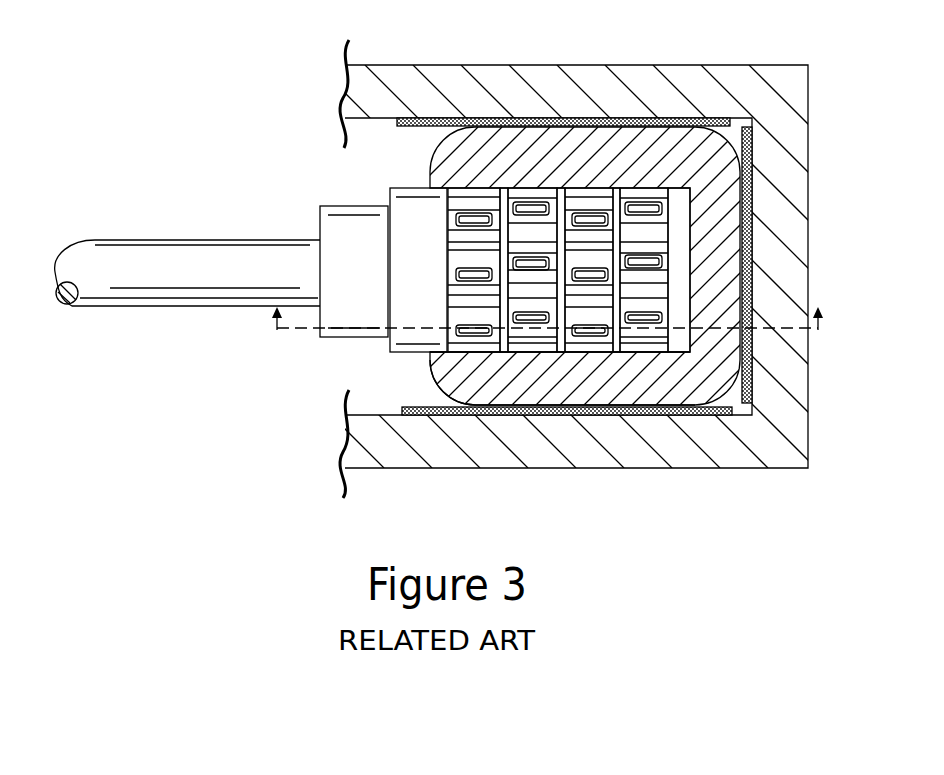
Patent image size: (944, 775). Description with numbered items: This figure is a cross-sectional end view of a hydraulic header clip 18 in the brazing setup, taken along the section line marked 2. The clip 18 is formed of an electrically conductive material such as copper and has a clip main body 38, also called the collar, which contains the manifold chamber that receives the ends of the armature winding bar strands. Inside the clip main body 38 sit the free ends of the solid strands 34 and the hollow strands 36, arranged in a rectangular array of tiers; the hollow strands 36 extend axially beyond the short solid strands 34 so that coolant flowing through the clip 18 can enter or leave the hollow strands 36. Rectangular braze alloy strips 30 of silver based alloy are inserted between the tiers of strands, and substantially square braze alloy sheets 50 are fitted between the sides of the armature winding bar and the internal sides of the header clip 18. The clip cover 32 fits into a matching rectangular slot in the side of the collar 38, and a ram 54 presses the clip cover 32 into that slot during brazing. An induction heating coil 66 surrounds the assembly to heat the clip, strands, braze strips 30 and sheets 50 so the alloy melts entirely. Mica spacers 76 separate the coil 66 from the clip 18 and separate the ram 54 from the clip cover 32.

The induction heating coil 66 is at (320, 86).
The mica spacers 76 is at (388, 187).
The hydraulic header clip 18 is at (700, 147).
The clip main body 38 is at (613, 375).
The ram 54 is at (102, 232).
The clip cover 32 is at (413, 252).
The braze alloy sheets 50 is at (668, 232).
The hollow copper strands 36 is at (632, 207).
The solid copper strands 34 is at (590, 300).
The braze alloy strips 30 is at (503, 350).
The section line 2- 2 is at (549, 320).